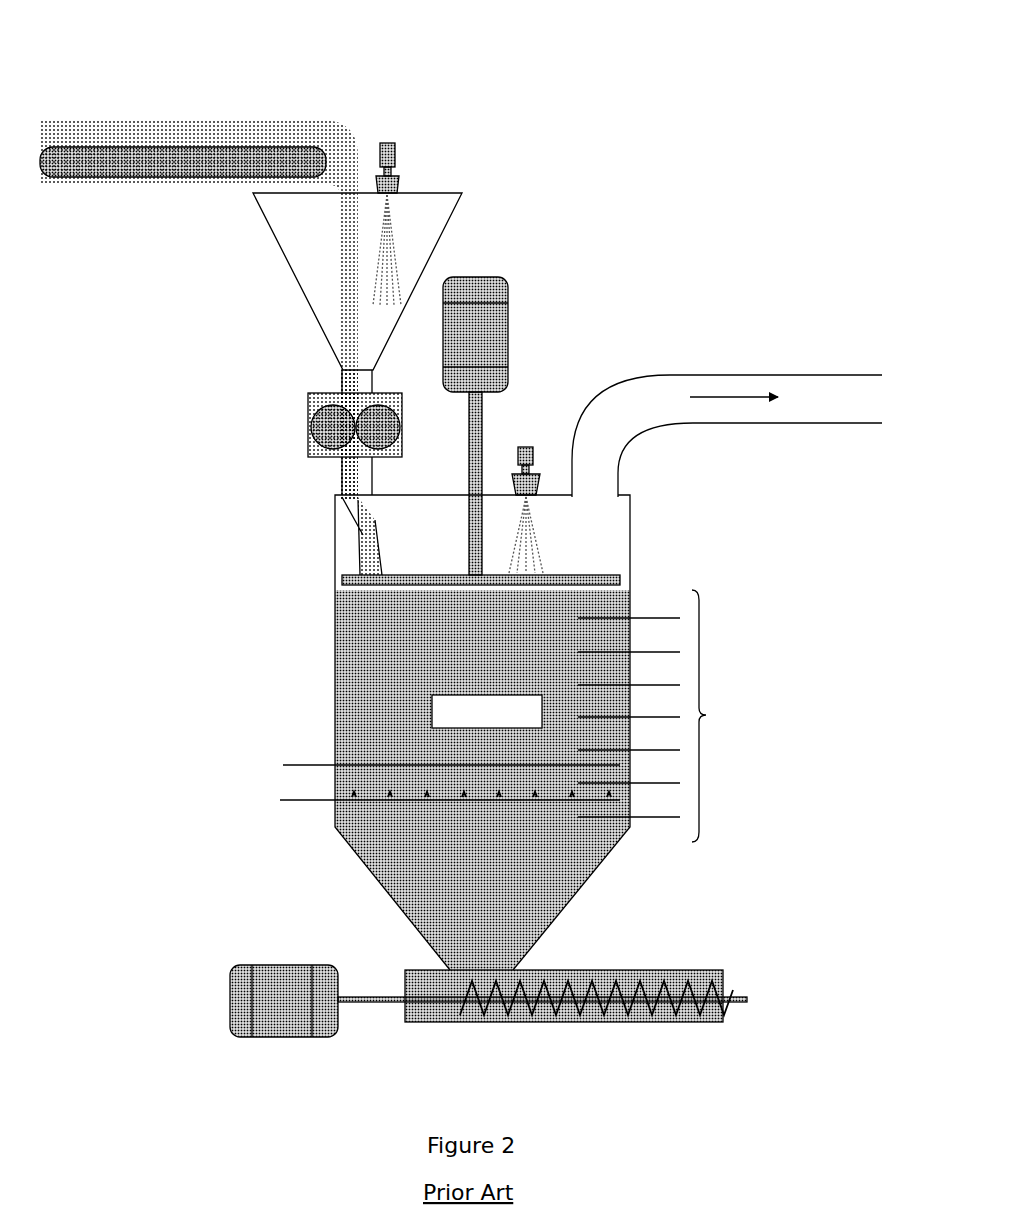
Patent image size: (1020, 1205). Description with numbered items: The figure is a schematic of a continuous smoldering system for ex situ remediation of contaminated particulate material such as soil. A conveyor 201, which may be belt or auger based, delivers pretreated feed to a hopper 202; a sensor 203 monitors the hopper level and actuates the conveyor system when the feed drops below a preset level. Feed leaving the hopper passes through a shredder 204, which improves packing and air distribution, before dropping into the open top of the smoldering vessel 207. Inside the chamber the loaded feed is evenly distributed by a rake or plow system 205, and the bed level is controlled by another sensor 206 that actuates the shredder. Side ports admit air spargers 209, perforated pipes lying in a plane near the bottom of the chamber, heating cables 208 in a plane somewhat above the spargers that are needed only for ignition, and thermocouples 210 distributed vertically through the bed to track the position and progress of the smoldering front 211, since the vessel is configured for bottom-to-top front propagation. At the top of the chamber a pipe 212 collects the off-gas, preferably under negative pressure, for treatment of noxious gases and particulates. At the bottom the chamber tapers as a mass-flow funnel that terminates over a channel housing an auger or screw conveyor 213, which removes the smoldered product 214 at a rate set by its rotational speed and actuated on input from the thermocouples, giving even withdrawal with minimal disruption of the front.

The conveyor 201 is at (180, 125).
The hopper 202 is at (292, 293).
The sensor 203 is at (408, 140).
The shredder 204 is at (300, 430).
The rake or plow system 205 is at (521, 275).
The sensor 206 is at (530, 432).
The smoldering vessel 207 is at (316, 662).
The heating cables 208 is at (428, 765).
The air spargers 209 is at (429, 799).
The thermocouples 210 is at (666, 716).
The smoldering front 211 is at (487, 711).
The pipe 212 is at (727, 436).
The auger or screw conveyor 213 is at (562, 1033).
The smoldered product 214 is at (565, 998).